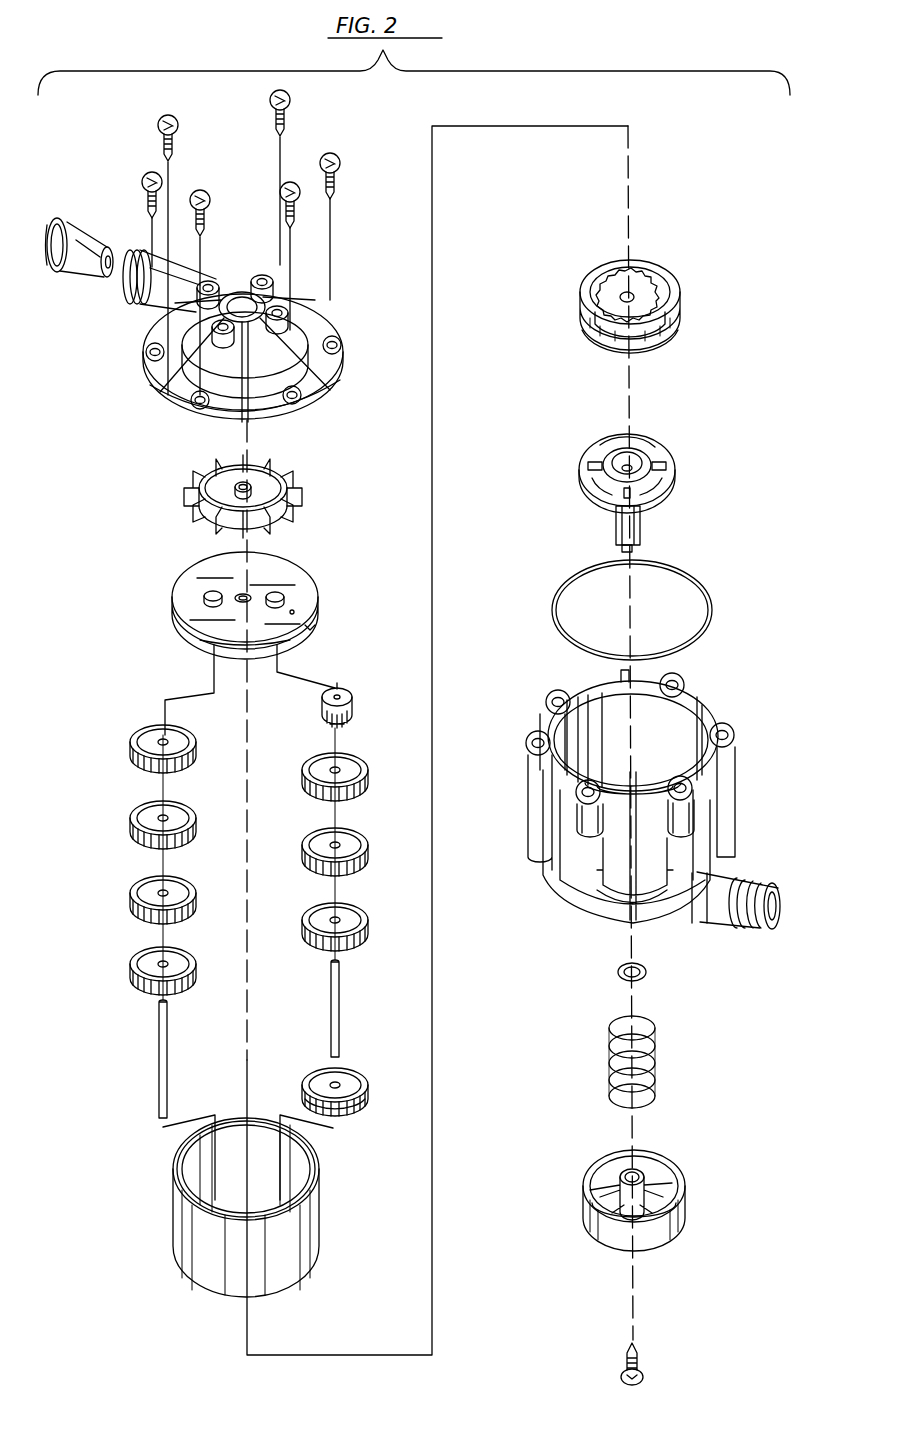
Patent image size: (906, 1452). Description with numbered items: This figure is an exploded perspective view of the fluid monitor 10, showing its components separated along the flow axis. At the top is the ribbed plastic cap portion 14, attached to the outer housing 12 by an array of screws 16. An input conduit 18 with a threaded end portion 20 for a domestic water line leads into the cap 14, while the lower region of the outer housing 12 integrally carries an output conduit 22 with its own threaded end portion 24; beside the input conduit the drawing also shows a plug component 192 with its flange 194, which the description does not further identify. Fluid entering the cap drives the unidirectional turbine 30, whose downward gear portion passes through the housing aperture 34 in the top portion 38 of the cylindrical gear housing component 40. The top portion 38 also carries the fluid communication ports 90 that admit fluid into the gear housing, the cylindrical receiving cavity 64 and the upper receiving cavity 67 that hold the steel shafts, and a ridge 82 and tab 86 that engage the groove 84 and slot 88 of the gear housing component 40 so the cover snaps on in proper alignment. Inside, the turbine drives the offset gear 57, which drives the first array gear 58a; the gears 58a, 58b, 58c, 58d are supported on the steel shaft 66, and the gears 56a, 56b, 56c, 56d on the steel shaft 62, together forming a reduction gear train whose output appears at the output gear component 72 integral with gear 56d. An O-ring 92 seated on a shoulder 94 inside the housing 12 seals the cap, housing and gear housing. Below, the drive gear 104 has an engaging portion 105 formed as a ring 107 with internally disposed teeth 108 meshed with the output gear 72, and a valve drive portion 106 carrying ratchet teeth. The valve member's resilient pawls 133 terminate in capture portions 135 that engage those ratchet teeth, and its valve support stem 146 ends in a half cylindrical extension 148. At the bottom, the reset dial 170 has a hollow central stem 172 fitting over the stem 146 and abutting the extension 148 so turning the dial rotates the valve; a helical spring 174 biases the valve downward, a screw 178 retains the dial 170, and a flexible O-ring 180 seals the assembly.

The monitor 10 is at (386, 252).
The outer housing 12 is at (730, 797).
The cap portion 14 is at (305, 328).
The screws 16 is at (291, 99).
The input conduit 18 is at (197, 273).
The threaded end portion 20 is at (137, 297).
The output conduit 22 is at (705, 903).
The threaded end portion 24 is at (760, 875).
The turbine 30 is at (298, 498).
The housing aperture 34 is at (238, 607).
The top portion 38 is at (317, 597).
The gear housing component 40 is at (187, 1245).
The gear 56a is at (365, 763).
The gear 56b is at (365, 838).
The gear 56c is at (365, 908).
The gear 56d is at (360, 1068).
The offset gear 57 is at (349, 698).
The gear 58a is at (132, 758).
The gear 58b is at (130, 832).
The gear 58c is at (132, 905).
The gear 58d is at (130, 980).
The steel shaft 62 is at (340, 1002).
The cylindrical receiving cavity 64 is at (268, 585).
The steel shaft 66 is at (160, 1062).
The upper receiving cavity 67 is at (210, 597).
The output gear component 72 is at (347, 1125).
The ridge 82 is at (258, 657).
The groove 84 is at (197, 1157).
The tab 86 is at (312, 630).
The slot 88 is at (313, 1197).
The fluid communication ports 90 is at (253, 630).
The O-ring 92 is at (707, 593).
The shoulder 94 is at (698, 700).
The drive gear 104 is at (699, 303).
The engaging portion 105 is at (618, 252).
The valve drive portion 106 is at (598, 358).
The ring 107 is at (648, 333).
The internally disposed teeth 108 is at (652, 272).
The resilient pawls 133 is at (653, 447).
The capture portion 135 is at (665, 465).
The valve support stem 146 is at (640, 525).
The half cylindrical extension 148 is at (640, 547).
The dial 170 is at (683, 1210).
The hollow central stem 172 is at (653, 1183).
The helical spring 174 is at (657, 1043).
The screw 178 is at (642, 1360).
The flexible O-ring 180 is at (618, 972).
The plug 192 is at (92, 240).
The plug flange 194 is at (108, 285).